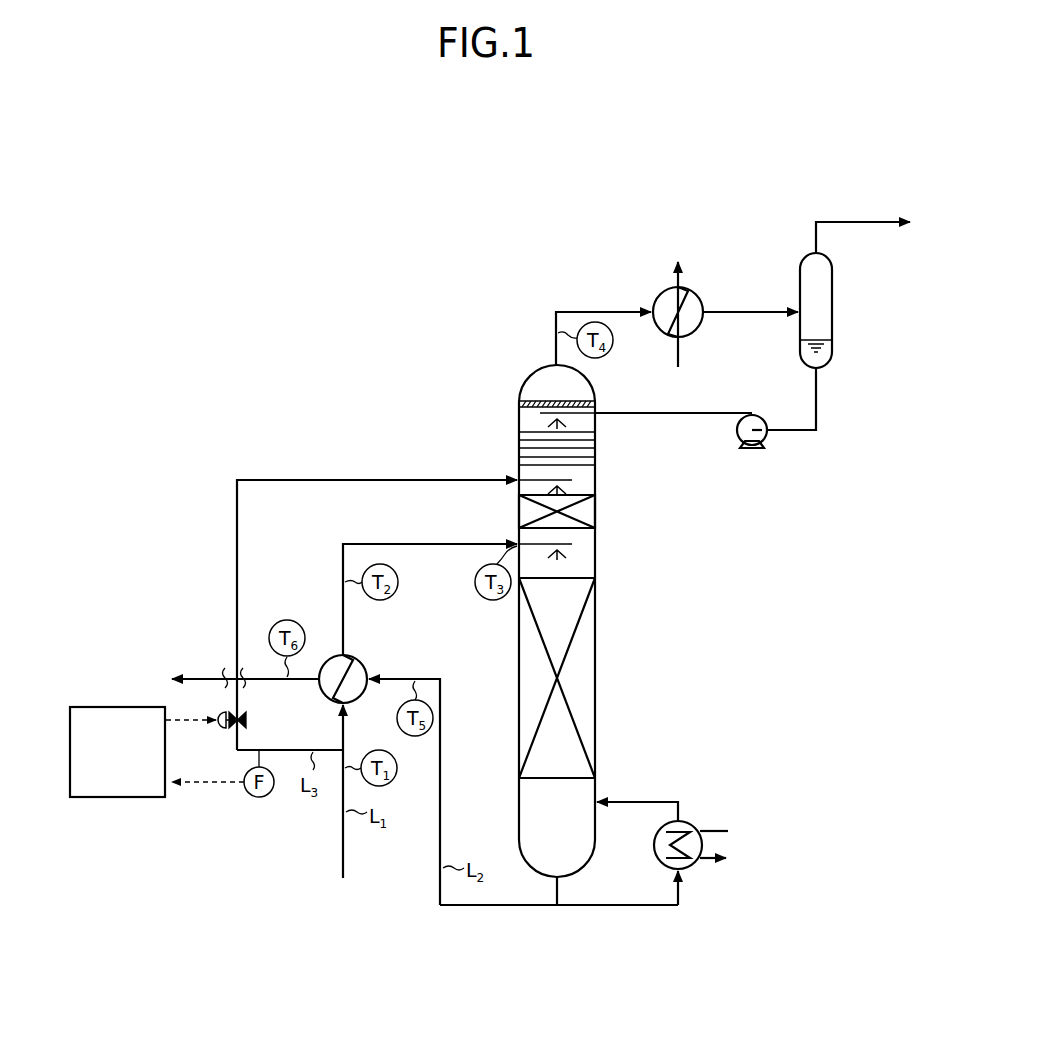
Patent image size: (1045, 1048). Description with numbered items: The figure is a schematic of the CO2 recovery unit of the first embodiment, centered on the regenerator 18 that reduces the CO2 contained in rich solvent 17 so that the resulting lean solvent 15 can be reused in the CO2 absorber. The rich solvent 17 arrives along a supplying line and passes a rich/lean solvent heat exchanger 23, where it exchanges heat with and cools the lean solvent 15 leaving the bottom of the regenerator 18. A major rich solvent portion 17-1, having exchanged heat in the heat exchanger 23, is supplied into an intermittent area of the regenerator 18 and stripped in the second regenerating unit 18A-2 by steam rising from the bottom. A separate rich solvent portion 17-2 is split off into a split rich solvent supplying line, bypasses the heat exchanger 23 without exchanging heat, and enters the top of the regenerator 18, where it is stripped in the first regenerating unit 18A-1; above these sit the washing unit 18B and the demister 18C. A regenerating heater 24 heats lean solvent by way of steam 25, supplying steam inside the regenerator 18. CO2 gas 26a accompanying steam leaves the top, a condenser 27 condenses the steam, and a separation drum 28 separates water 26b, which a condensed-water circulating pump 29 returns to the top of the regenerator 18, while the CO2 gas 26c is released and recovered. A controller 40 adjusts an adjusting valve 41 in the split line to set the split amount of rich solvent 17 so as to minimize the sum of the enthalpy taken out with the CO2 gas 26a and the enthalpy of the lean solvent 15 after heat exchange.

The lean solvent 15 is at (215, 668).
The rich solvent 17 is at (332, 841).
The major rich solvent portion 17-1 is at (460, 553).
The rich solvent portion 17-2 is at (460, 470).
The regenerator 18 is at (624, 648).
The first regenerating unit 18A-1 is at (600, 511).
The second regenerating unit 18A-2 is at (600, 696).
The washing unit 18B is at (598, 455).
The demister 18C is at (532, 400).
The rich/lean solvent heat exchanger 23 is at (368, 660).
The regenerating heater 24 is at (688, 818).
The steam 25 is at (720, 831).
The CO2 gas accompanying steam 26a is at (612, 302).
The water 26b is at (639, 425).
The CO2 gas 26c is at (892, 213).
The condenser 27 is at (691, 296).
The separation drum 28 is at (834, 306).
The condensed-water circulating pump 29 is at (762, 423).
The controller 40 is at (109, 721).
The adjusting valve 41 is at (221, 730).